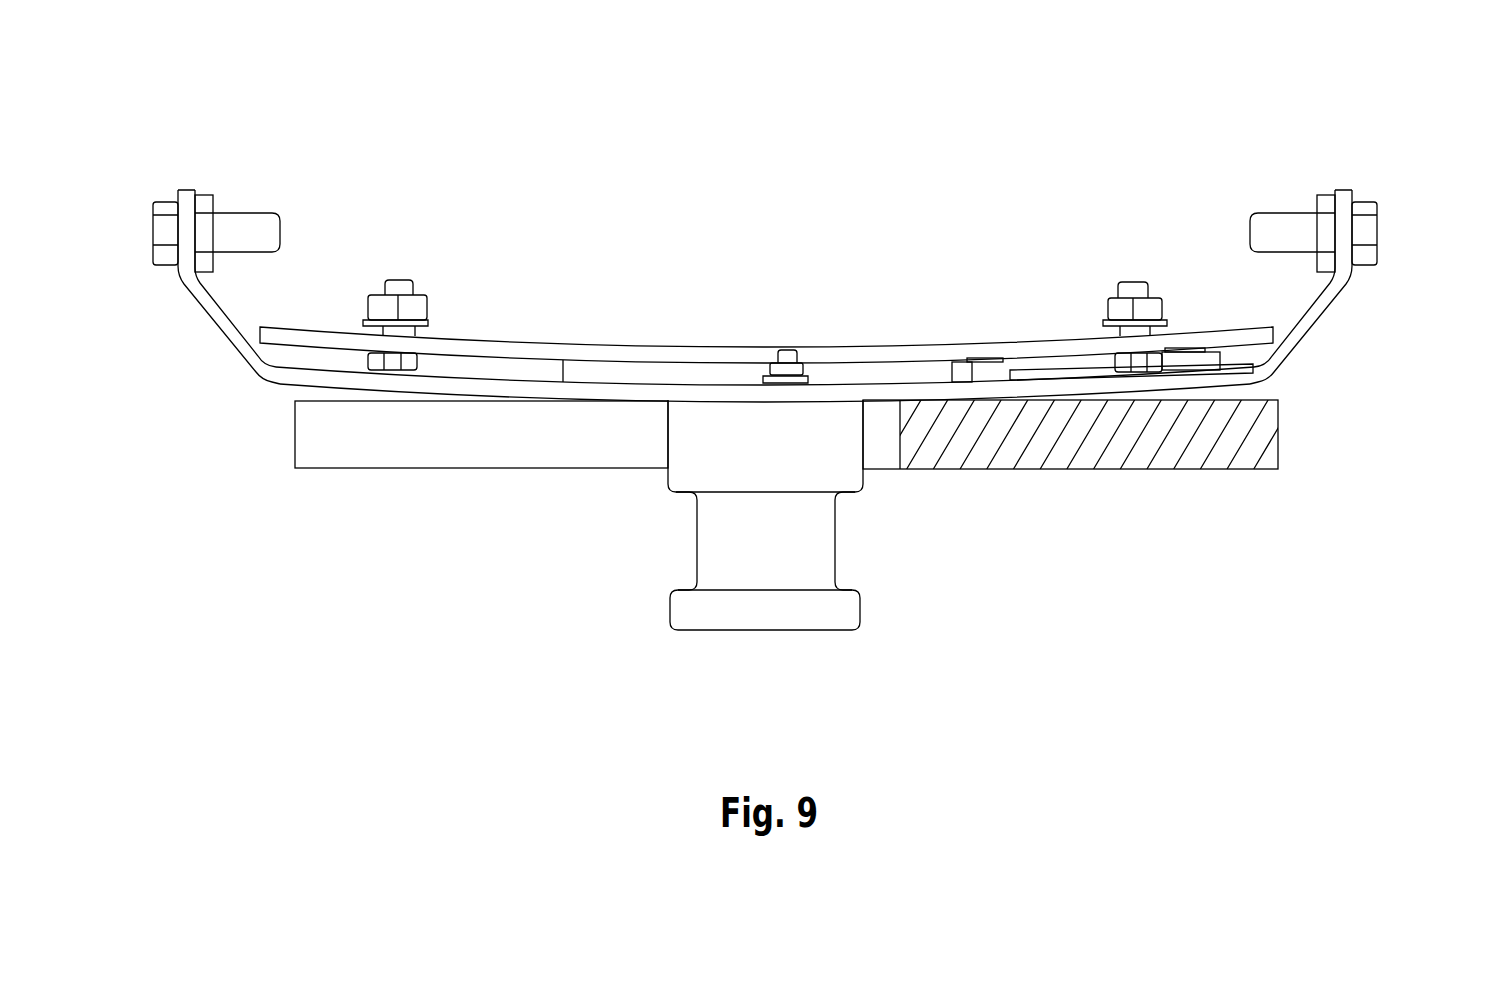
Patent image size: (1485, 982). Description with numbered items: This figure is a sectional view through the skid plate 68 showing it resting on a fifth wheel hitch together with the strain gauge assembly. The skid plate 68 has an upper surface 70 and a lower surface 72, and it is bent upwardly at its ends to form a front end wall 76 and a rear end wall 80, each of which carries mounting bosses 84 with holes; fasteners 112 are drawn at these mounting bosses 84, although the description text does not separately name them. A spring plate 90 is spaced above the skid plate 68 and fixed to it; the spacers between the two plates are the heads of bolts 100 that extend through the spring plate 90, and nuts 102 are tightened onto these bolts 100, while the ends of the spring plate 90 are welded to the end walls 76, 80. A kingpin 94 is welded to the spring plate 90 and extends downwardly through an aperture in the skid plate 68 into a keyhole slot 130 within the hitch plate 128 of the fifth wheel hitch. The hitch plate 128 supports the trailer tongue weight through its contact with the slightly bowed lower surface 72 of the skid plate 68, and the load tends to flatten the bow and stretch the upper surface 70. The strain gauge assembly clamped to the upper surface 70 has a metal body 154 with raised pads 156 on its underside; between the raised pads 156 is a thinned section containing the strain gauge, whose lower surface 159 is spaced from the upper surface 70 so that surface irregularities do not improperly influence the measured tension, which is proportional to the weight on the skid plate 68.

The skid plate 68 is at (547, 388).
The upper surface 70 is at (497, 388).
The lower surface 72 is at (751, 369).
The front end wall 76 is at (1355, 272).
The rear end wall 80 is at (188, 272).
The mounting bosses 84 is at (207, 192).
The spring plate 90 is at (632, 347).
The kingpin 94 is at (768, 630).
The bolts 100 is at (1071, 270).
The nuts 102 is at (1112, 310).
The side bolt 112 is at (265, 214).
The hitch plate 128 is at (1158, 470).
The keyhole slot 130 is at (430, 447).
The metal body 154 is at (1062, 408).
The raised pads 156 is at (993, 368).
The lower surface 159 is at (1084, 368).